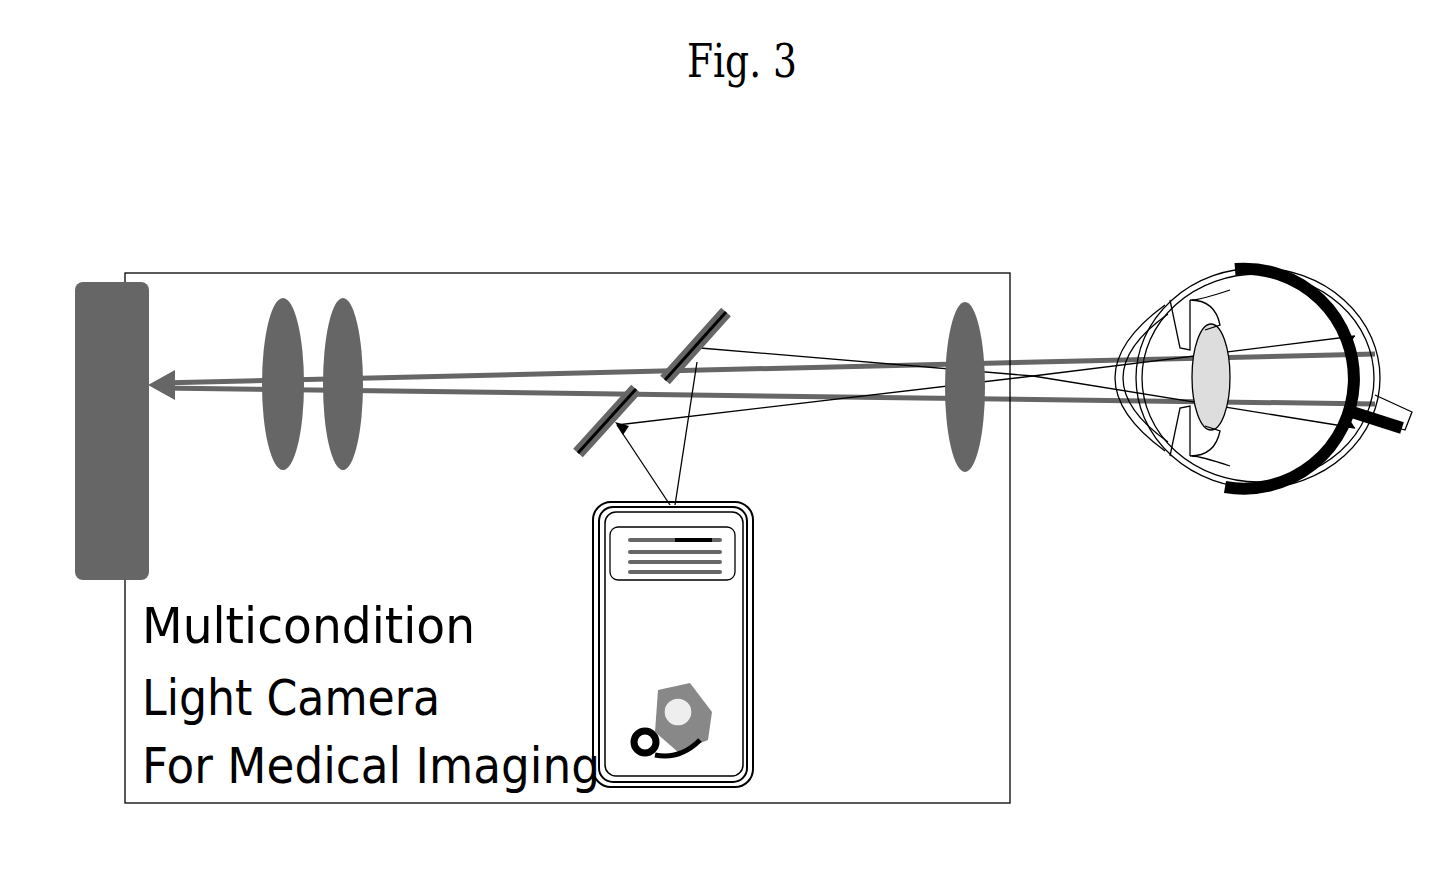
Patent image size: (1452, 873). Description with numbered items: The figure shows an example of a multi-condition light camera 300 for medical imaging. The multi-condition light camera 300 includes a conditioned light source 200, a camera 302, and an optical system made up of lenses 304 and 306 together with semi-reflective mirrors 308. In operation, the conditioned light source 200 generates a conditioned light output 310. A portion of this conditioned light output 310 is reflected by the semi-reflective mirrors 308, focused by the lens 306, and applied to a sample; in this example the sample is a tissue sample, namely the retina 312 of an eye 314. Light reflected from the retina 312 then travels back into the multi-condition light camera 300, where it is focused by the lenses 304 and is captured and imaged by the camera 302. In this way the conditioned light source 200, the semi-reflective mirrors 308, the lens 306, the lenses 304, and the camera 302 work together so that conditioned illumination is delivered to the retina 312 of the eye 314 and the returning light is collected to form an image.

The conditioned light source 200 is at (753, 657).
The multi-condition light camera 300 is at (553, 273).
The camera 302 is at (90, 288).
The lenses 304 is at (330, 303).
The lens 306 is at (958, 303).
The semi-reflective mirrors 308 is at (723, 308).
The conditioned light output 310 is at (678, 480).
The retina 312 is at (1330, 303).
The eye 314 is at (1217, 272).